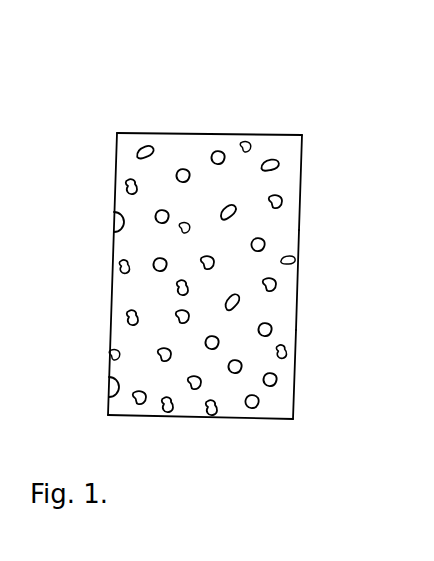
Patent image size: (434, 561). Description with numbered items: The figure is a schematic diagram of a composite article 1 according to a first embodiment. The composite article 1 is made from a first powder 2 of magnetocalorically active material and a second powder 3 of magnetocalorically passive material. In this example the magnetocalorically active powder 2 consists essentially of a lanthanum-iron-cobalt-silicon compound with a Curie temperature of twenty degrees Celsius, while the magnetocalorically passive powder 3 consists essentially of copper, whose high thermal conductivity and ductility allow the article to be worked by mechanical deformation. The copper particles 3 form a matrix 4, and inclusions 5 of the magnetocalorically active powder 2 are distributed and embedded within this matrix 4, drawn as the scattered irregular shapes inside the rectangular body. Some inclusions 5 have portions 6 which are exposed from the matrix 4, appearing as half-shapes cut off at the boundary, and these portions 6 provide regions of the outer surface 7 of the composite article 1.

The composite article 1 is at (317, 47).
The first powder 2 is at (275, 167).
The second powder 3 is at (298, 181).
The matrix 4 is at (296, 291).
The inclusions 5 is at (116, 269).
The portions 6 is at (113, 222).
The outer surface 7 is at (295, 378).